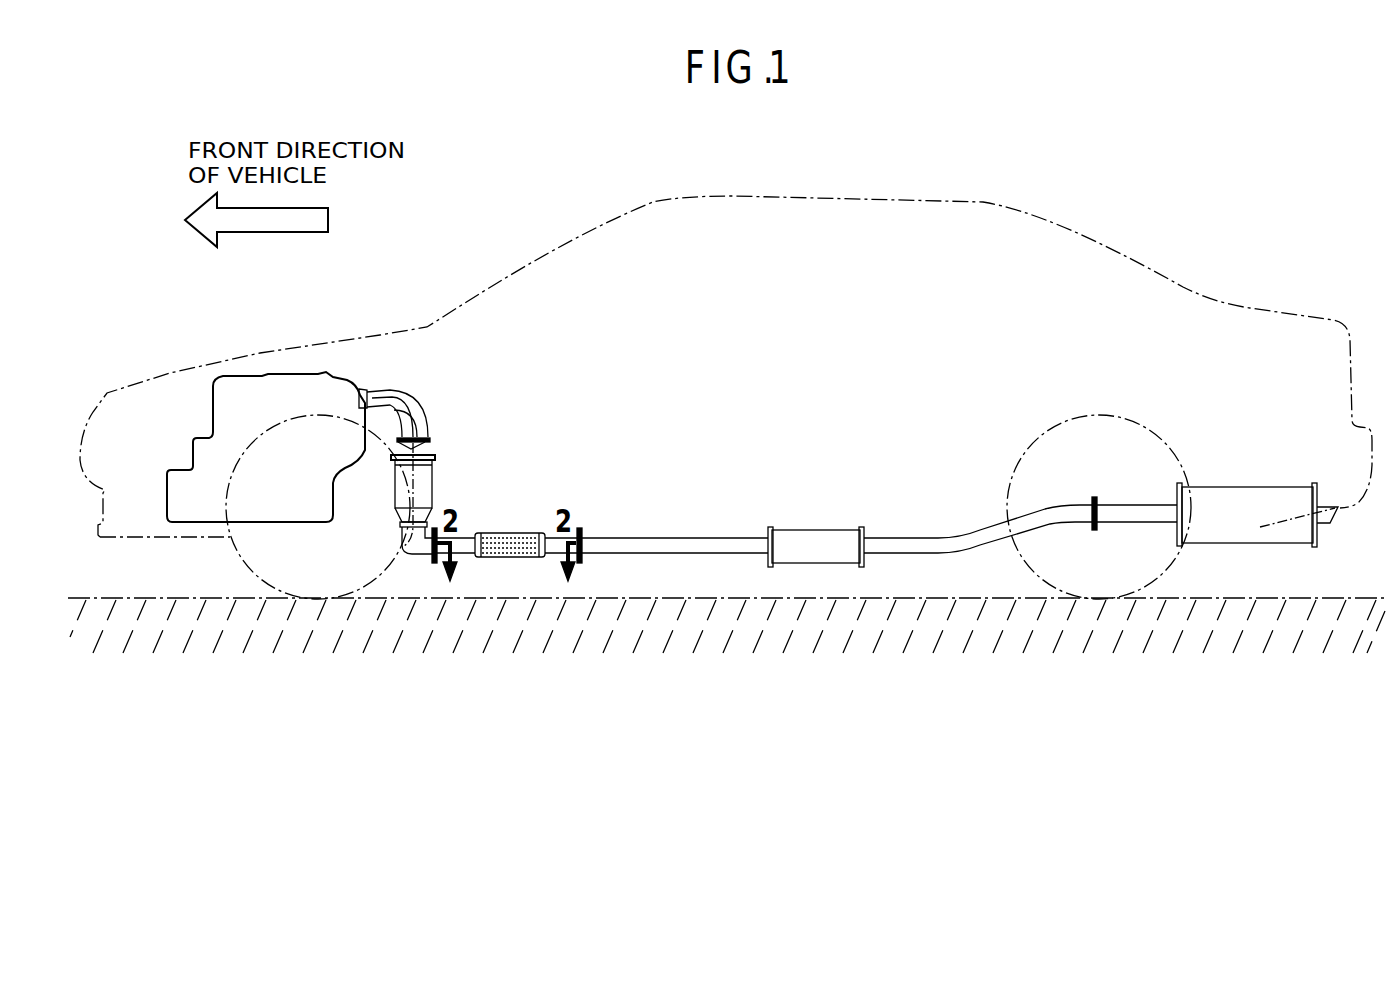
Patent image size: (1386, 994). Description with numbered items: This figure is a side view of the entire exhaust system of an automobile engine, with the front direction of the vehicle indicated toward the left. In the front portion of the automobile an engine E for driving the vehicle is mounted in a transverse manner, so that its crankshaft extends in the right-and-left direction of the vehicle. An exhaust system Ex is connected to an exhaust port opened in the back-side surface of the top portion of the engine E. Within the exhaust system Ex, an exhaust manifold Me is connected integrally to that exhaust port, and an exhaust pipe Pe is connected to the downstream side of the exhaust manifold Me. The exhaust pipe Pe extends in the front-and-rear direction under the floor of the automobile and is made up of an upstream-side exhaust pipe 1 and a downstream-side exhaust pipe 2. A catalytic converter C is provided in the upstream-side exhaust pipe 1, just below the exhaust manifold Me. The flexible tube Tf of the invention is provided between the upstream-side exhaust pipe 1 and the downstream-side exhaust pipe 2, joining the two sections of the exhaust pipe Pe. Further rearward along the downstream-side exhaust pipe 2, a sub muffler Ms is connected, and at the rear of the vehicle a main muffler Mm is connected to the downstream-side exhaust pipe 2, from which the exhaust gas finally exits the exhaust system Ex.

The engine E is at (287, 364).
The exhaust manifold Me is at (419, 403).
The catalytic converter C is at (445, 474).
The exhaust pipe Pe is at (613, 462).
The upstream-side exhaust pipe 1 is at (467, 537).
The downstream-side exhaust pipe 2 is at (655, 539).
The flexible tube Tf is at (509, 571).
The sub muffler Ms is at (813, 518).
The exhaust system Ex is at (692, 569).
The main muffler Mm is at (1227, 475).